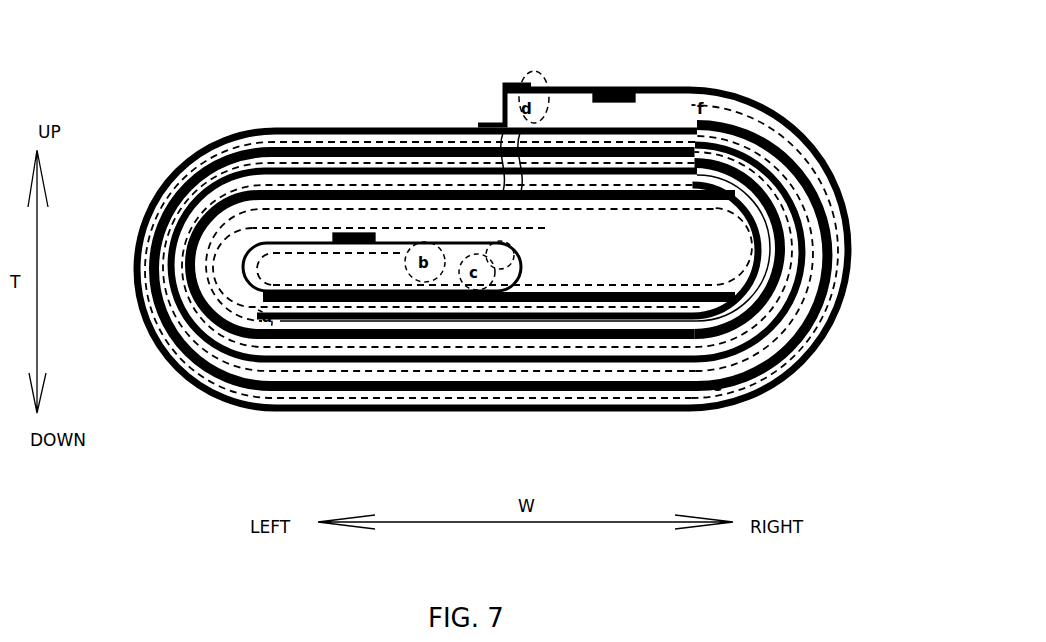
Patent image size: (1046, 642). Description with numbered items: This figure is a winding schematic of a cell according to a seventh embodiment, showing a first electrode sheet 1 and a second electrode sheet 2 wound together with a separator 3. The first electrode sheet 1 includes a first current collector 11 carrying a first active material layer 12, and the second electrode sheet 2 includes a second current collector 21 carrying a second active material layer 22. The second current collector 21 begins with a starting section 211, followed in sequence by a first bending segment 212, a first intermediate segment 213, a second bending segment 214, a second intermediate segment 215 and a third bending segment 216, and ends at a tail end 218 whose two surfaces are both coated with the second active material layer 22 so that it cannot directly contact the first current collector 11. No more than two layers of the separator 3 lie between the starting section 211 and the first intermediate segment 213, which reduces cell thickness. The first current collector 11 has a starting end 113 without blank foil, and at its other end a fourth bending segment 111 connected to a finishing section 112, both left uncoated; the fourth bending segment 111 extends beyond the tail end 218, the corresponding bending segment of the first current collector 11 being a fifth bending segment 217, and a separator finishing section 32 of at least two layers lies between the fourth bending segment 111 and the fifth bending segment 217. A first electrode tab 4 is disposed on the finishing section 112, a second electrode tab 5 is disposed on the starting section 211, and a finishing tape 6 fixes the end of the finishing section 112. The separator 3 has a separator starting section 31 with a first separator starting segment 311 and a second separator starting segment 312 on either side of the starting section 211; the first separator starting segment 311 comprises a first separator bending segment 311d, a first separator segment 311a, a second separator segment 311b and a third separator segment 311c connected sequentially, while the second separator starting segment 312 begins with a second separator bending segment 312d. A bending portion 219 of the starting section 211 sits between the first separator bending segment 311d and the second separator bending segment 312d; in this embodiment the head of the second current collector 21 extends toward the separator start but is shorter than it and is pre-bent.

The first electrode sheet 1 is at (748, 411).
The second electrode sheet 2 is at (245, 250).
The separator 3 is at (792, 362).
The first electrode tab 4 is at (615, 90).
The second electrode tab 5 is at (360, 235).
The finishing tape 6 is at (506, 88).
The first current collector 11 is at (637, 413).
The first active material layer 12 is at (585, 410).
The second current collector 21 is at (278, 243).
The second active material layer 22 is at (718, 293).
The separator starting section 31 is at (540, 244).
The separator finishing section 32 is at (758, 132).
The fourth bending segment 111 is at (845, 195).
The finishing section 112 is at (655, 86).
The starting end 113 is at (270, 330).
The starting section 211 is at (393, 243).
The first bending segment 212 is at (242, 270).
The first intermediate segment 213 is at (598, 292).
The second bending segment 214 is at (747, 242).
The second intermediate segment 215 is at (320, 193).
The third bending segment 216 is at (210, 317).
The fifth bending segment 217 is at (807, 295).
The tail end 218 is at (703, 387).
The bending portion 219 is at (523, 108).
The first separator starting segment 311 is at (489, 262).
The first separator segment 311a is at (390, 253).
The second separator segment 311b is at (450, 285).
The third separator segment 311c is at (692, 207).
The first separator bending segment 311d is at (493, 253).
The second separator starting segment 312 is at (490, 250).
The second separator bending segment 312d is at (503, 245).